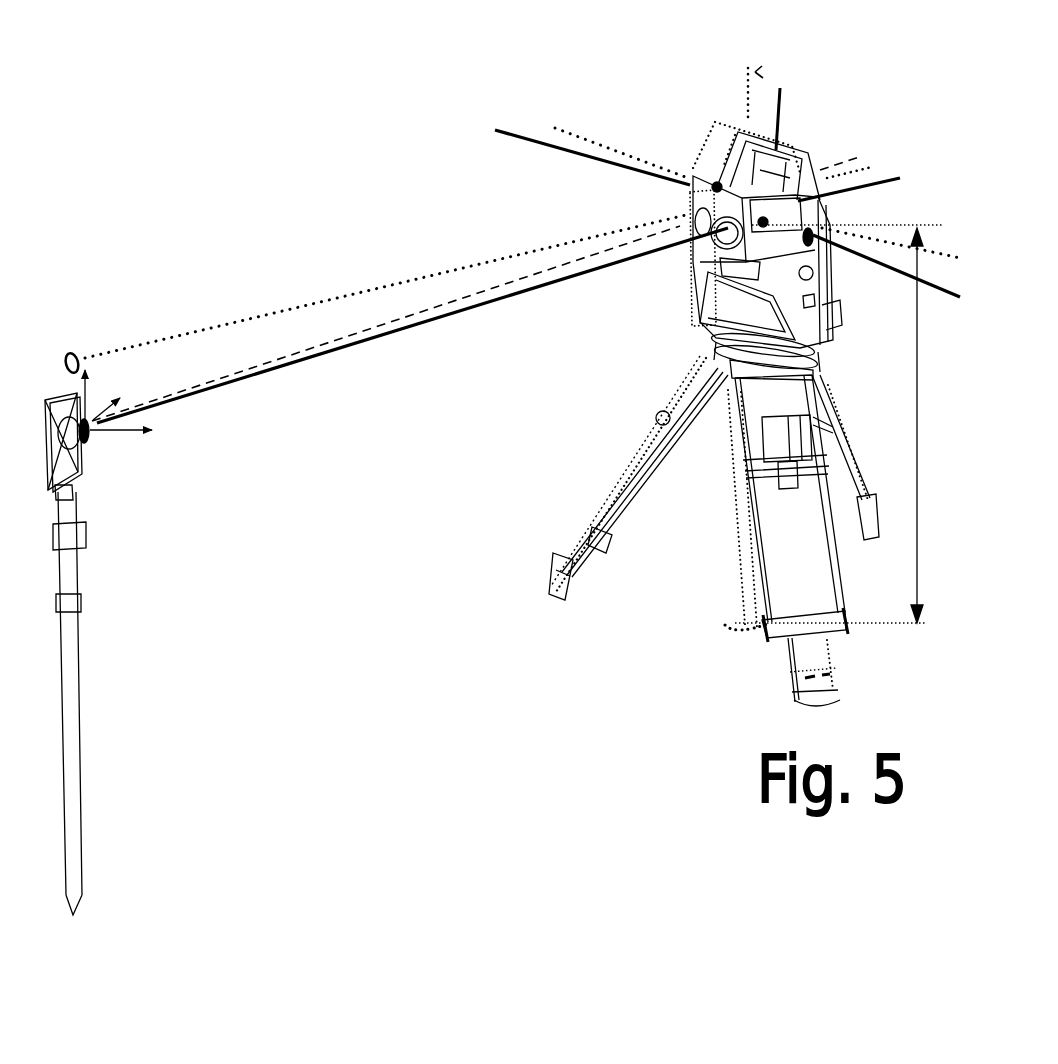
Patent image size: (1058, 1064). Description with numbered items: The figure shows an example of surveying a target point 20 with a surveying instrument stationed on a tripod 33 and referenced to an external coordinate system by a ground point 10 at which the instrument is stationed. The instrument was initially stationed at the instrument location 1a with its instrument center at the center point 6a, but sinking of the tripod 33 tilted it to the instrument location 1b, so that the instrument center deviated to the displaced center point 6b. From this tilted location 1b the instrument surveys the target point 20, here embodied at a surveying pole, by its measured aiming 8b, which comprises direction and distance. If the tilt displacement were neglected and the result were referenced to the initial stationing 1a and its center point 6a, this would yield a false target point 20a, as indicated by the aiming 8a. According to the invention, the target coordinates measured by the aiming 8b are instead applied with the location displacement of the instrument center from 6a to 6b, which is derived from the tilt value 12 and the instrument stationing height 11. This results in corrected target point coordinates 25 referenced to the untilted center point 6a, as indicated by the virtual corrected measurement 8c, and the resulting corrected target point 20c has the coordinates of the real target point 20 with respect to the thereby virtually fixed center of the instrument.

The stationing instrument location 1a is at (727, 103).
The tilted instrument location 1b is at (822, 138).
The initial instrument center point 6a is at (762, 218).
The displaced instrument center point 6b is at (716, 184).
The false aiming indication 8a is at (273, 310).
The measured aiming 8b is at (372, 345).
The virtual corrected measurement 8c is at (390, 320).
The ground point 10 is at (723, 632).
The instrument stationing height 11 is at (917, 377).
The tilt value 12 is at (781, 68).
The target point 20 is at (85, 470).
The false target point 20a is at (86, 344).
The corrected target point 20c is at (99, 453).
The corrected target point coordinates 25 is at (108, 435).
The tripod 33 is at (667, 373).